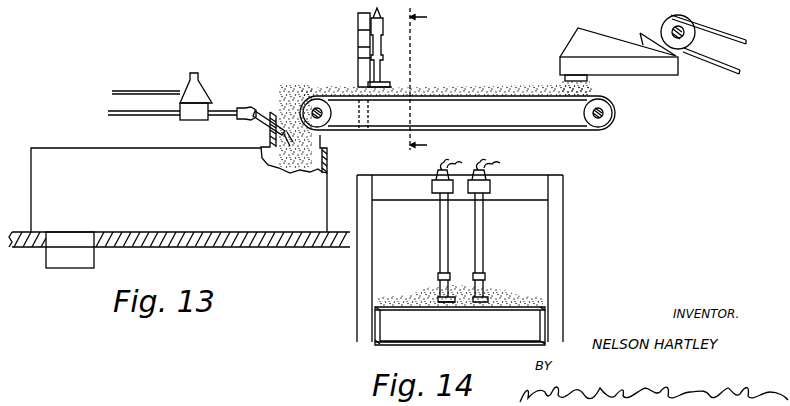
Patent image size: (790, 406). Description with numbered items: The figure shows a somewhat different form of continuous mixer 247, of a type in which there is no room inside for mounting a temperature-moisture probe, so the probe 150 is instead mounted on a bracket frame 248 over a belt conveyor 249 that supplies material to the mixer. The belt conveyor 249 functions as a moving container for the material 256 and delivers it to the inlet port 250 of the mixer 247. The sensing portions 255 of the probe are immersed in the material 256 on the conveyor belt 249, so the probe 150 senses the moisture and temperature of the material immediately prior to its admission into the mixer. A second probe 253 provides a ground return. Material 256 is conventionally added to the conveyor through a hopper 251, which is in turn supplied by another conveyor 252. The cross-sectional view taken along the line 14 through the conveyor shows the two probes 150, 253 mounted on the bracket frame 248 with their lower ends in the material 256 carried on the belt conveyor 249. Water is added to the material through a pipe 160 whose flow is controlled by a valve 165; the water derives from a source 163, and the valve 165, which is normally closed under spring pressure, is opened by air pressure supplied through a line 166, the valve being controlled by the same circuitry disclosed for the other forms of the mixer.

In FIG. 13, the section line 14— 14 is at (428, 81).
In FIG. 13, the probe 150 is at (372, 47).
In FIG. 14, the probe 150 is at (440, 240).
In FIG. 13, the pipe 160 is at (261, 126).
In FIG. 13, the source 163 is at (152, 113).
In FIG. 13, the valve 165 is at (202, 103).
In FIG. 13, the line 166 is at (158, 91).
In FIG. 13, the mixer 247 is at (52, 160).
In FIG. 13, the bracket frame 248 is at (358, 25).
In FIG. 14, the bracket frame 248 is at (525, 192).
In FIG. 14, the belt conveyor 249 is at (428, 307).
In FIG. 13, the inlet port 250 is at (282, 112).
In FIG. 13, the hopper 251 is at (652, 68).
In FIG. 13, the conveyor 252 is at (745, 40).
In FIG. 14, the probe 253 is at (482, 255).
In FIG. 13, the sensing portions 255 is at (375, 88).
In FIG. 14, the sensing portions 255 is at (440, 297).
In FIG. 13, the material 256 is at (507, 85).
In FIG. 14, the material 256 is at (497, 298).